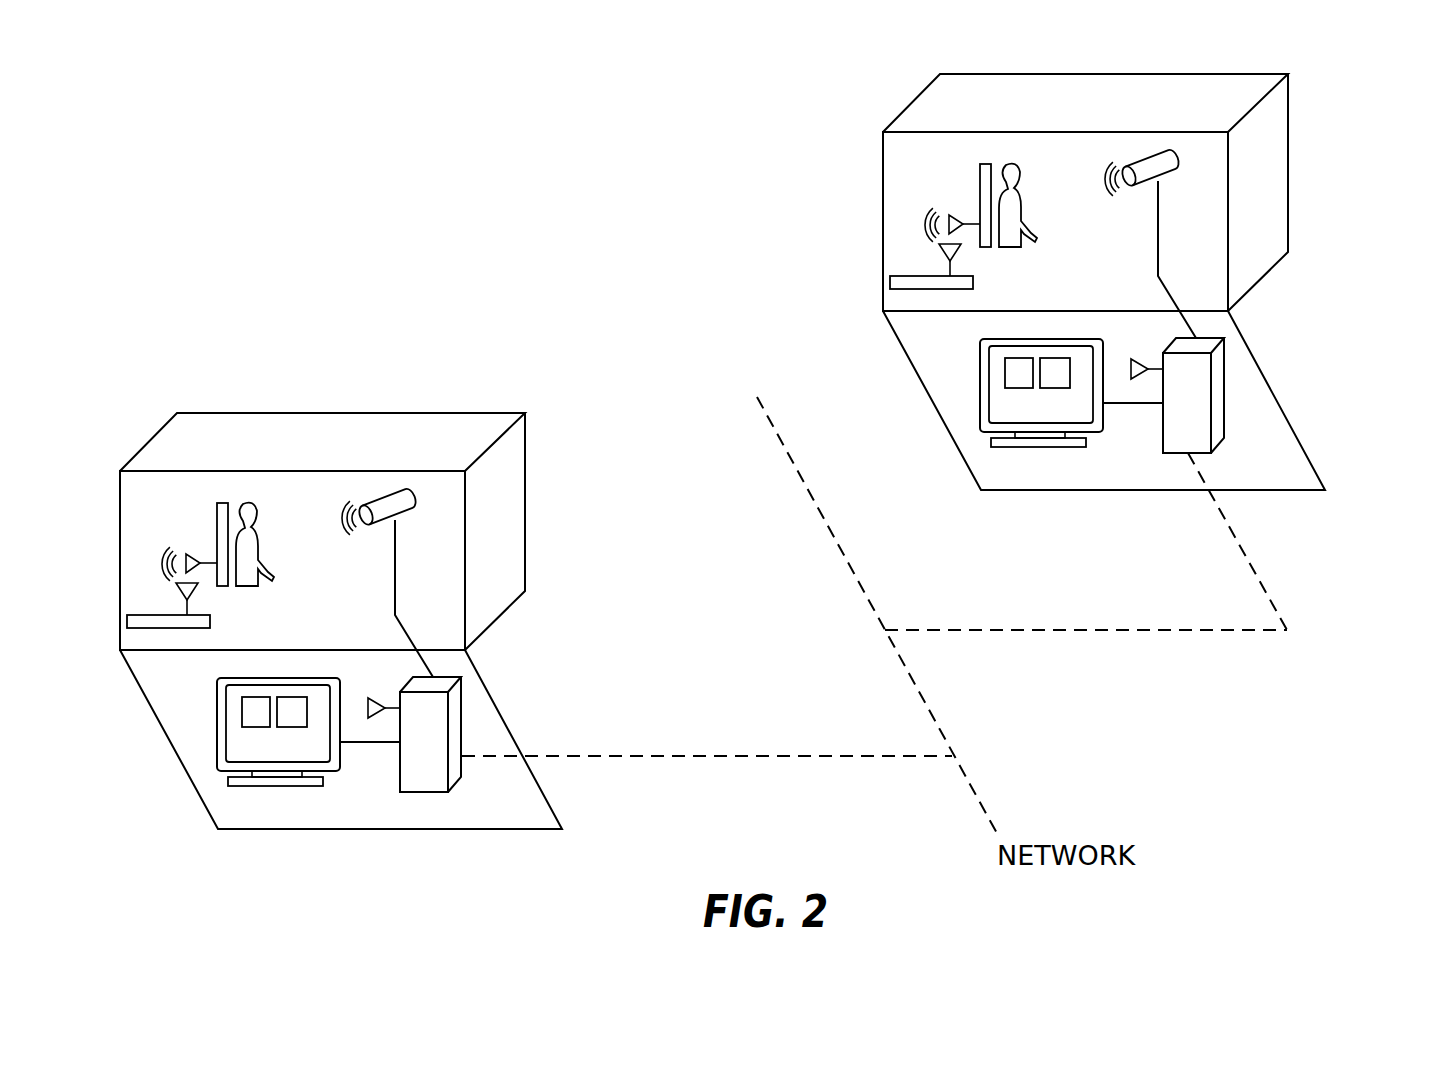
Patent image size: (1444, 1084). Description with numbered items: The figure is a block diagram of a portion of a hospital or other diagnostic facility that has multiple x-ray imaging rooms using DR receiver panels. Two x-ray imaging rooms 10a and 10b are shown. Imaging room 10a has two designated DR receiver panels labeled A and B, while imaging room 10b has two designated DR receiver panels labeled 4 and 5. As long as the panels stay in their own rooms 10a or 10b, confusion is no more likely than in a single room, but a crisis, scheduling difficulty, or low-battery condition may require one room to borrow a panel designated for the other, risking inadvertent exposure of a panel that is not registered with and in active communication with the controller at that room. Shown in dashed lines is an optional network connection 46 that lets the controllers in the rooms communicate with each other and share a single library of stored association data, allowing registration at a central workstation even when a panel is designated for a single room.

The x-ray imaging room 10a is at (172, 355).
The x-ray imaging room 10b is at (1137, 282).
The DR receiver panel label A is at (217, 520).
The DR receiver panel label B is at (127, 621).
The DR receiver panel label 4 is at (911, 256).
The DR receiver panel label 5 is at (977, 204).
The network connection 46 is at (722, 757).